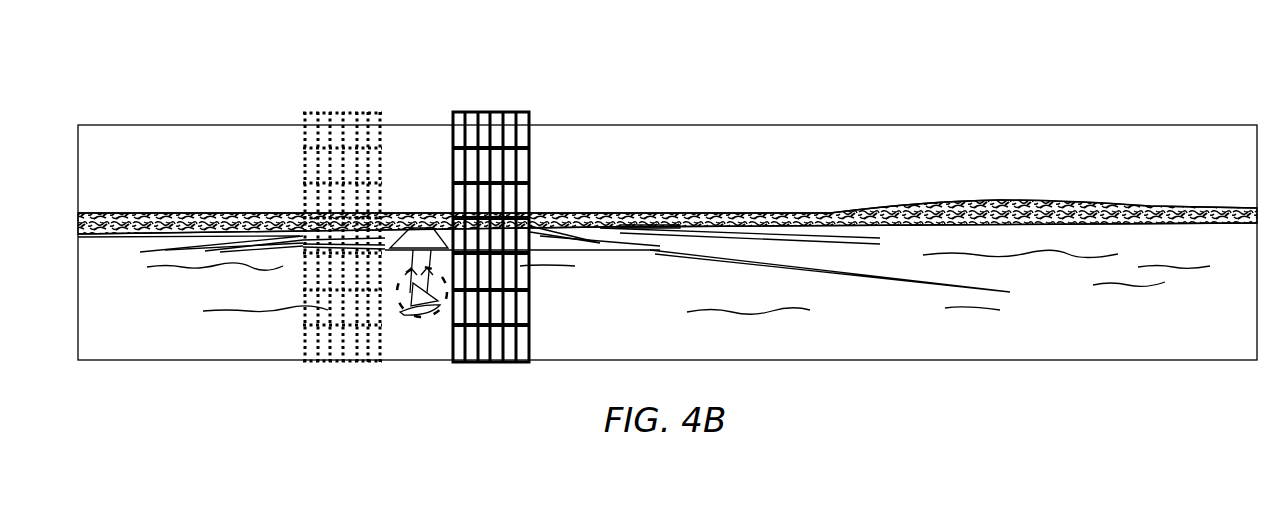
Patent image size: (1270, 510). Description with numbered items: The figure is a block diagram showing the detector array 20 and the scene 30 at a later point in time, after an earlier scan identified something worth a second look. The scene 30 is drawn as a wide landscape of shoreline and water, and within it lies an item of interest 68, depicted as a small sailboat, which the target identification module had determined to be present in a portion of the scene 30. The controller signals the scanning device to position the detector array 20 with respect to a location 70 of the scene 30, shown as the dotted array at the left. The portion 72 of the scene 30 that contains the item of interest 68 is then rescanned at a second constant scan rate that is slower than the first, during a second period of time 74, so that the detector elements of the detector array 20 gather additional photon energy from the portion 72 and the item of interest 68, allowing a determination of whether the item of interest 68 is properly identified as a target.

The detector array 20 is at (416, 200).
The scene 30 is at (843, 125).
The item of interest 68 is at (398, 306).
The location 70 is at (297, 74).
The portion 72 is at (378, 365).
The second period of time 74 is at (452, 61).